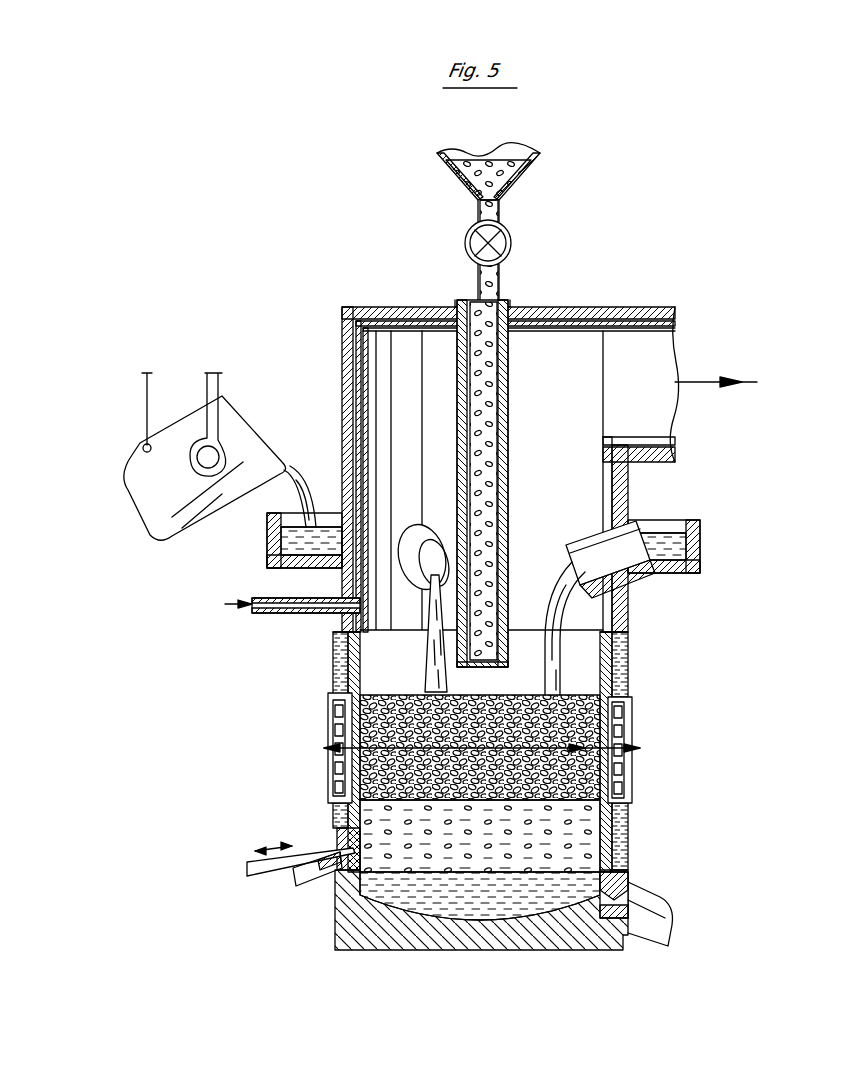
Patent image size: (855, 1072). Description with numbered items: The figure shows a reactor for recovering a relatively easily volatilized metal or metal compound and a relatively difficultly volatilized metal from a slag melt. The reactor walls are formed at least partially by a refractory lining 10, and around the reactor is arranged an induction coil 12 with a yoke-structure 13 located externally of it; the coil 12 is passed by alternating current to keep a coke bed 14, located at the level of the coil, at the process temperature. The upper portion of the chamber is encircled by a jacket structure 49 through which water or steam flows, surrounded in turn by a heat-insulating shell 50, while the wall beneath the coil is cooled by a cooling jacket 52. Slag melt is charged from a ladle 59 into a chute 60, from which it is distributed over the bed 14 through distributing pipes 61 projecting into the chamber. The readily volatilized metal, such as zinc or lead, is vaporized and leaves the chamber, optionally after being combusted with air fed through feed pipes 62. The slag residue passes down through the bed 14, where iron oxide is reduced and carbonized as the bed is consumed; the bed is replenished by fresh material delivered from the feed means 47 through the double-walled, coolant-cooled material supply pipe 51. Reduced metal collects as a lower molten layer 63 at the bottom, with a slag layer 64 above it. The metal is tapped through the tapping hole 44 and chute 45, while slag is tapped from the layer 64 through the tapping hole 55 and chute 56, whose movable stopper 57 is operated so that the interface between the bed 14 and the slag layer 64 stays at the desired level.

The refractory lining 10 is at (608, 656).
The induction coil 12 is at (620, 727).
The yoke-structure 13 is at (632, 782).
The coke bed 14 is at (499, 750).
The tapping hole 44 is at (620, 894).
The chute 45 is at (655, 907).
The feed means 47 is at (511, 243).
The jacket structure 49 is at (574, 318).
The heat-insulating shell 50 is at (620, 313).
The material supply pipe 51 is at (509, 420).
The cooling jacket 52 is at (628, 683).
The tapping hole 55 is at (338, 843).
The chute 56 is at (318, 881).
The movable stopper 57 is at (268, 877).
The ladle 59 is at (170, 535).
The chute 60 is at (283, 545).
The distributing pipes 61 is at (442, 548).
The feed pipes 62 is at (293, 614).
The molten layer 63 is at (440, 905).
The slag layer 64 is at (517, 860).